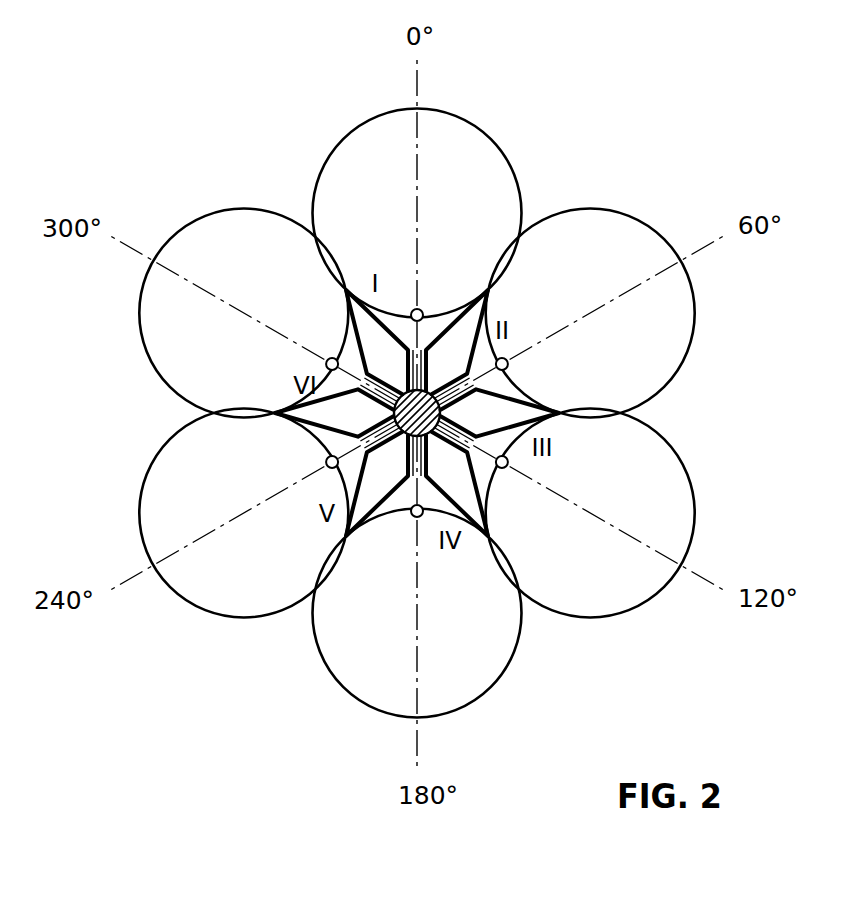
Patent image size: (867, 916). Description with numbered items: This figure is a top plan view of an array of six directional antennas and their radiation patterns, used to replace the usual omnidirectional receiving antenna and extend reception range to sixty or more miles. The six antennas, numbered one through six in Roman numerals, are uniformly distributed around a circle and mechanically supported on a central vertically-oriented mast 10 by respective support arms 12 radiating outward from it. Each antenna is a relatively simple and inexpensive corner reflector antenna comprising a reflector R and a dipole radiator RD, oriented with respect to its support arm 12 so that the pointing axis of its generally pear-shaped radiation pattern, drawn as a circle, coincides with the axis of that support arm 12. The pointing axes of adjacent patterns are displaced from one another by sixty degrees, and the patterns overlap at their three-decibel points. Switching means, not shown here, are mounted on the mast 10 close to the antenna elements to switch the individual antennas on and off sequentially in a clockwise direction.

The mast 10 is at (410, 398).
The support arm 12 is at (500, 412).
The reflector R is at (470, 357).
The dipole radiator RD is at (508, 367).